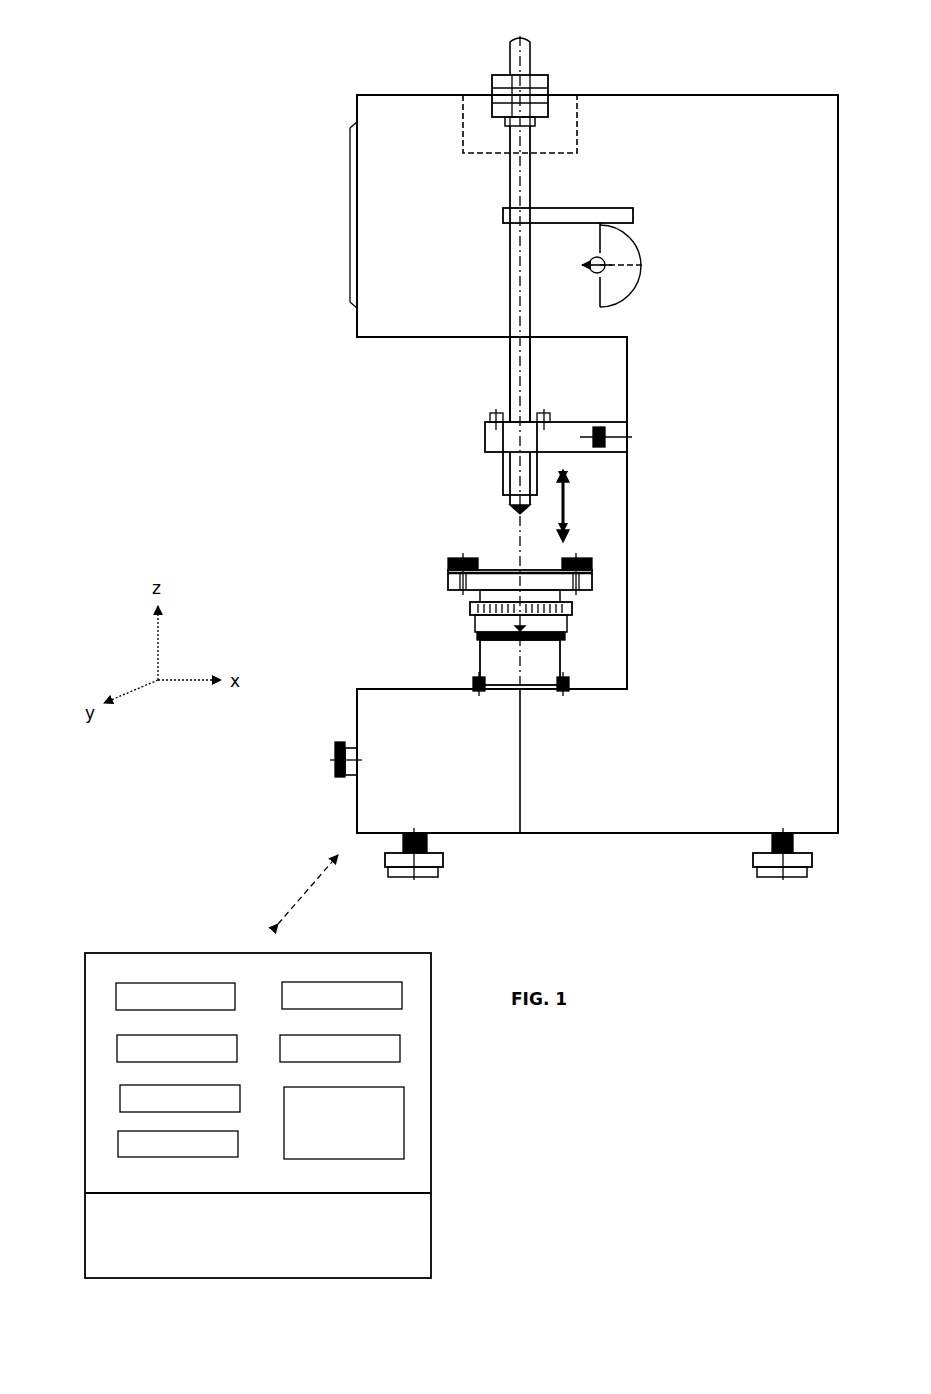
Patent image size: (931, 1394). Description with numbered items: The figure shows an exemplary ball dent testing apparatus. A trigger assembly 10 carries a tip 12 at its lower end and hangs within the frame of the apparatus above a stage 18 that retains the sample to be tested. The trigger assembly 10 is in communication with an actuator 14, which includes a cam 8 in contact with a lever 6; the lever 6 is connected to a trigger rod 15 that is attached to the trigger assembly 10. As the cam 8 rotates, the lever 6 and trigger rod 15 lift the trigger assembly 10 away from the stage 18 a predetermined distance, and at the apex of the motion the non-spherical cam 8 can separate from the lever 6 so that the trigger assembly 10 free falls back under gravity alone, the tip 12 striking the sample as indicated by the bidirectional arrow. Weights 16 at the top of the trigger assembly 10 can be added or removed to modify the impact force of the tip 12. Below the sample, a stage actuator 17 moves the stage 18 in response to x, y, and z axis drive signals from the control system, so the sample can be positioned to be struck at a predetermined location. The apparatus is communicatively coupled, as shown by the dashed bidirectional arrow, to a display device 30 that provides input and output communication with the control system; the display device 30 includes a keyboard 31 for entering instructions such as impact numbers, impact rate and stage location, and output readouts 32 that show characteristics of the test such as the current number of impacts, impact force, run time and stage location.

The lever 6 is at (597, 208).
The cam 8 is at (642, 277).
The trigger assembly 10 is at (518, 278).
The tip 12 is at (513, 505).
The actuator 14 is at (645, 222).
The trigger rod 15 is at (518, 352).
The weights 16 is at (548, 80).
The stage actuator 17 is at (475, 622).
The stage 18 is at (448, 568).
The display device 30 is at (231, 1085).
The keyboard 31 is at (264, 1249).
The output readouts 32 is at (117, 1045).